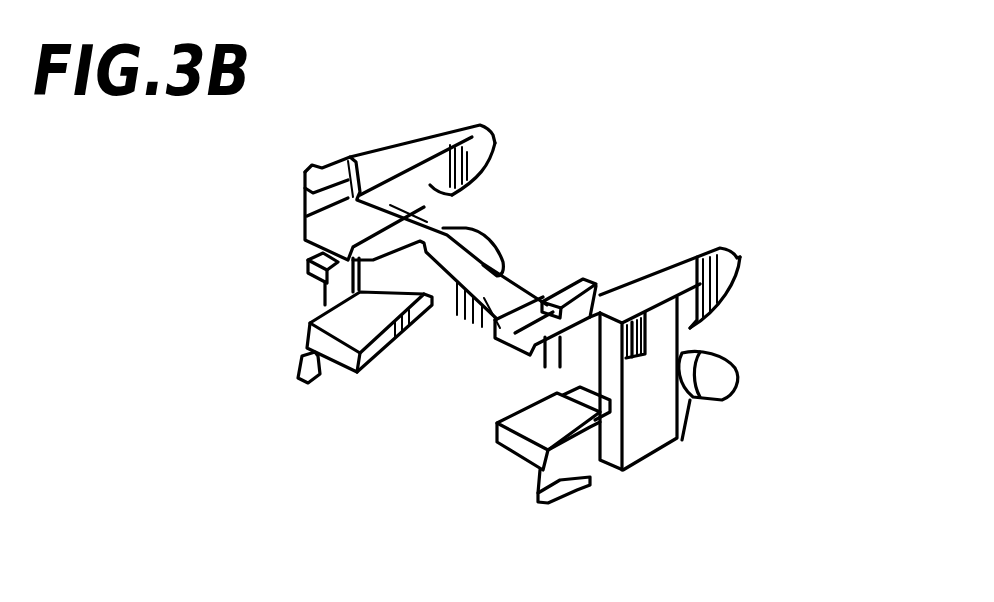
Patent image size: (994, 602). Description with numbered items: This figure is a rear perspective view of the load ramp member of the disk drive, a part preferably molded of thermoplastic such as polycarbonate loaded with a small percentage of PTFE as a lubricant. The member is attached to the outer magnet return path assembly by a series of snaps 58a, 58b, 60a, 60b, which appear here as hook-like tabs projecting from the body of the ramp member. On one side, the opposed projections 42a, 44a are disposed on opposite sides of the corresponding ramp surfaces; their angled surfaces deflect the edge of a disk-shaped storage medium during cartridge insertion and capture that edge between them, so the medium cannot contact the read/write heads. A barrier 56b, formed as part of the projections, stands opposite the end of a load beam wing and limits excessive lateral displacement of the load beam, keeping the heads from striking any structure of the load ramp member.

The projection 42a is at (738, 260).
The projection 44a is at (717, 377).
The barrier 56b is at (452, 195).
The snap 58a is at (522, 342).
The snap 58b is at (302, 188).
The snap 60a is at (547, 503).
The snap 60b is at (303, 384).